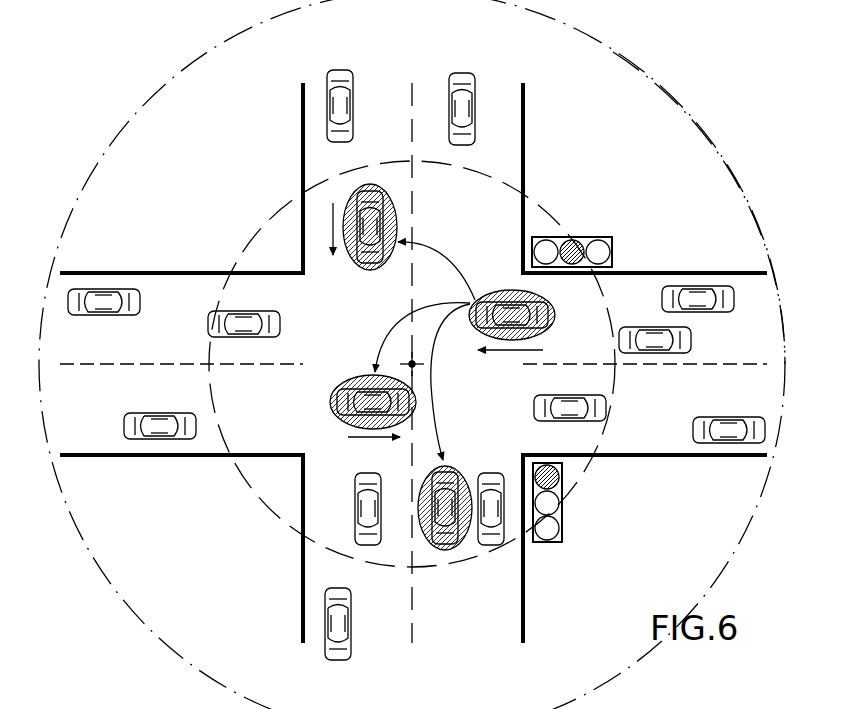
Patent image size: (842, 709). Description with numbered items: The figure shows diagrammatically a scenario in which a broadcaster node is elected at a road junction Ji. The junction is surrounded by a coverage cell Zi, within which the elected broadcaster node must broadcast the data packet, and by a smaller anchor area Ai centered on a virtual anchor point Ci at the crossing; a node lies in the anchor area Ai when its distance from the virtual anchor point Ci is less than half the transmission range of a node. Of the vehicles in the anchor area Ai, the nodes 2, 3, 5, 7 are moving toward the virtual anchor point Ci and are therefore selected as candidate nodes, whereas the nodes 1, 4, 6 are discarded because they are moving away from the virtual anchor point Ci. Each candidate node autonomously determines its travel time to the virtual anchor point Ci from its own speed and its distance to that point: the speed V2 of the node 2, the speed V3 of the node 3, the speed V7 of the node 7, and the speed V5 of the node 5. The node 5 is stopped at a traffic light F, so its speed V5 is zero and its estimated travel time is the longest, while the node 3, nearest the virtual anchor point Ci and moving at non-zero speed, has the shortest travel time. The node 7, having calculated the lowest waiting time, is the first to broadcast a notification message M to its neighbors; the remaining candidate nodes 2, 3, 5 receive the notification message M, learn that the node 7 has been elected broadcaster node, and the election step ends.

The node 1 is at (256, 322).
The candidate node 2 is at (362, 252).
The candidate node 3 is at (346, 392).
The node 4 is at (366, 505).
The candidate node 5 is at (455, 483).
The node 6 is at (541, 406).
The broadcaster node 7 is at (520, 312).
The junction Ji is at (130, 82).
The coverage cell Zi is at (700, 128).
The anchor area Ai is at (283, 213).
The virtual anchor point Ci is at (413, 361).
The traffic light F is at (563, 516).
The speed of node 2 V2 is at (320, 229).
The speed of node 3 V3 is at (374, 451).
The speed of node 7 V7 is at (510, 363).
The speed of node 5 V5 is at (450, 568).
The notification message M is at (445, 257).